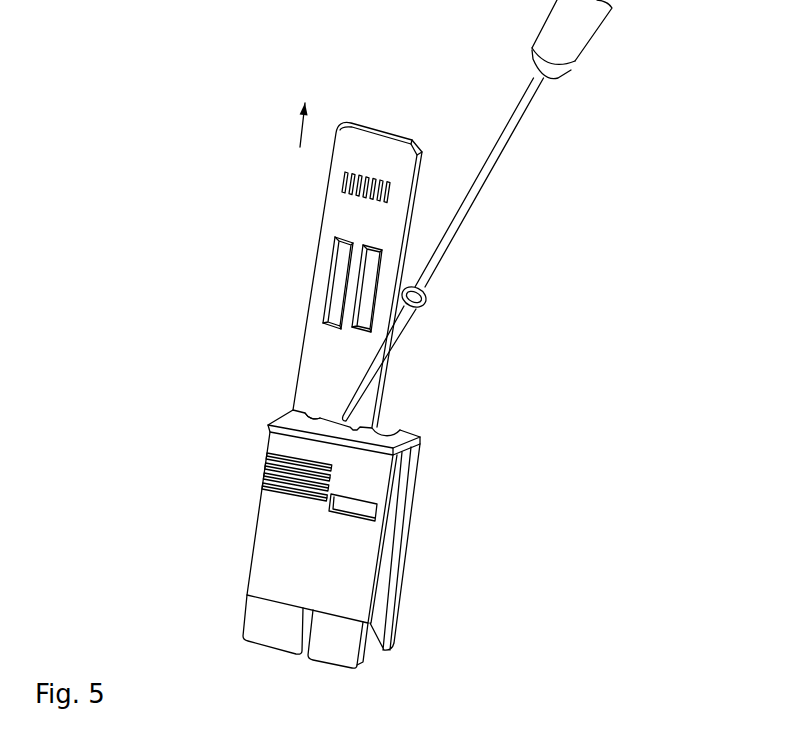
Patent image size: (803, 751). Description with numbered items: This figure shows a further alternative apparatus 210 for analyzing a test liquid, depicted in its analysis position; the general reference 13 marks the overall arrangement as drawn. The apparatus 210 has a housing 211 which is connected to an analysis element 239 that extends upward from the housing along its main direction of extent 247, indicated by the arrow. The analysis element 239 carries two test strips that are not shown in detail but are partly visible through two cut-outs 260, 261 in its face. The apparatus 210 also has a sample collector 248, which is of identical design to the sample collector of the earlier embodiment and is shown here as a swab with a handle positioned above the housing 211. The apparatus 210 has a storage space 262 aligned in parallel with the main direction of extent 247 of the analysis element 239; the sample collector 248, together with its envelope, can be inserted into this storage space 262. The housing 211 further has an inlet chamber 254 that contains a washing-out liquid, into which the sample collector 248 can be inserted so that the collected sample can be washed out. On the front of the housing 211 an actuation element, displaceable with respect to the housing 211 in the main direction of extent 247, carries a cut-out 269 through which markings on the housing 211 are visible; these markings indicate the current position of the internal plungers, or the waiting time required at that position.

The test system 13 is at (430, 334).
The main direction of extent 247 is at (281, 129).
The analysis element 239 is at (337, 206).
The cut-out 261 is at (373, 266).
The cut-out 260 is at (337, 298).
The inlet chamber 254 is at (330, 418).
The housing 211 is at (292, 420).
The storage space 262 is at (392, 433).
The cut-out 269 is at (358, 511).
The apparatus for analyzing a test liquid 210 is at (563, 208).
The sample collector 248 is at (583, 25).